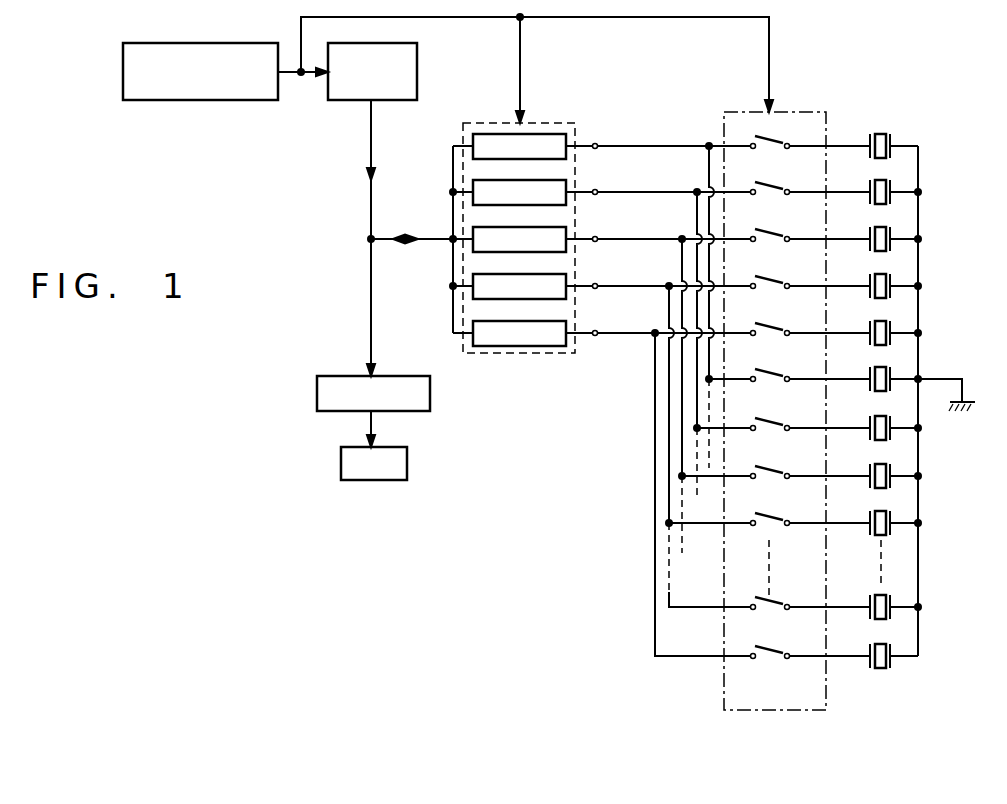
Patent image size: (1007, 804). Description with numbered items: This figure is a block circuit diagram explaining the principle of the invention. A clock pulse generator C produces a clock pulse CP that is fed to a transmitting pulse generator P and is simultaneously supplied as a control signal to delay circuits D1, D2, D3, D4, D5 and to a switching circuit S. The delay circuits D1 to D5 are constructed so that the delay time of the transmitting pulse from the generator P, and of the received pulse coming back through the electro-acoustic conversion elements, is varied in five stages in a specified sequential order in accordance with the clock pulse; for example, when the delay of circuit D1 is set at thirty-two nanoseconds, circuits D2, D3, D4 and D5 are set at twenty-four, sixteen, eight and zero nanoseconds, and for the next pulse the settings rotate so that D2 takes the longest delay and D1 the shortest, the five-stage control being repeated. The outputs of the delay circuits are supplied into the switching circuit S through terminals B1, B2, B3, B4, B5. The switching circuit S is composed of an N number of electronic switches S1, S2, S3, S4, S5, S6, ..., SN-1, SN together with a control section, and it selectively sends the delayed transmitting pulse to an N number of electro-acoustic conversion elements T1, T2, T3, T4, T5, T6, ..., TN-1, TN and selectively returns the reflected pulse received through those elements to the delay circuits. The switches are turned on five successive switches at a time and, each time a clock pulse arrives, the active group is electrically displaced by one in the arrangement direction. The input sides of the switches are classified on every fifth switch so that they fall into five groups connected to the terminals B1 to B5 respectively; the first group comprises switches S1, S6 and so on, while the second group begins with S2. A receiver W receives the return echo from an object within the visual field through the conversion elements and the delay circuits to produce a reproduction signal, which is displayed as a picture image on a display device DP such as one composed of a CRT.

The clock pulse generator C is at (240, 100).
The clock pulse CP is at (301, 74).
The transmitting pulse generator P is at (417, 72).
The delay circuit D1 is at (545, 134).
The delay circuit D2 is at (545, 180).
The delay circuit D3 is at (545, 227).
The delay circuit D4 is at (545, 274).
The delay circuit D5 is at (545, 321).
The terminal B1 is at (597, 143).
The terminal B2 is at (597, 189).
The terminal B3 is at (597, 236).
The terminal B4 is at (597, 283).
The terminal B5 is at (597, 330).
The switching circuit S is at (796, 112).
The electronic switch S1 is at (784, 141).
The electronic switch S2 is at (784, 187).
The electronic switch S3 is at (784, 234).
The electronic switch S4 is at (784, 281).
The electronic switch S5 is at (784, 328).
The electronic switch S6 is at (784, 374).
The electronic switch SN-1 is at (776, 600).
The electronic switch SN is at (778, 653).
The electro-acoustic conversion element T1 is at (888, 133).
The electro-acoustic conversion element T2 is at (888, 179).
The electro-acoustic conversion element T3 is at (888, 226).
The electro-acoustic conversion element T4 is at (888, 273).
The electro-acoustic conversion element T5 is at (888, 320).
The electro-acoustic conversion element T6 is at (888, 366).
The electro-acoustic conversion element TN-1 is at (886, 595).
The electro-acoustic conversion element TN is at (888, 638).
The receiver W is at (430, 396).
The display device DP is at (407, 465).